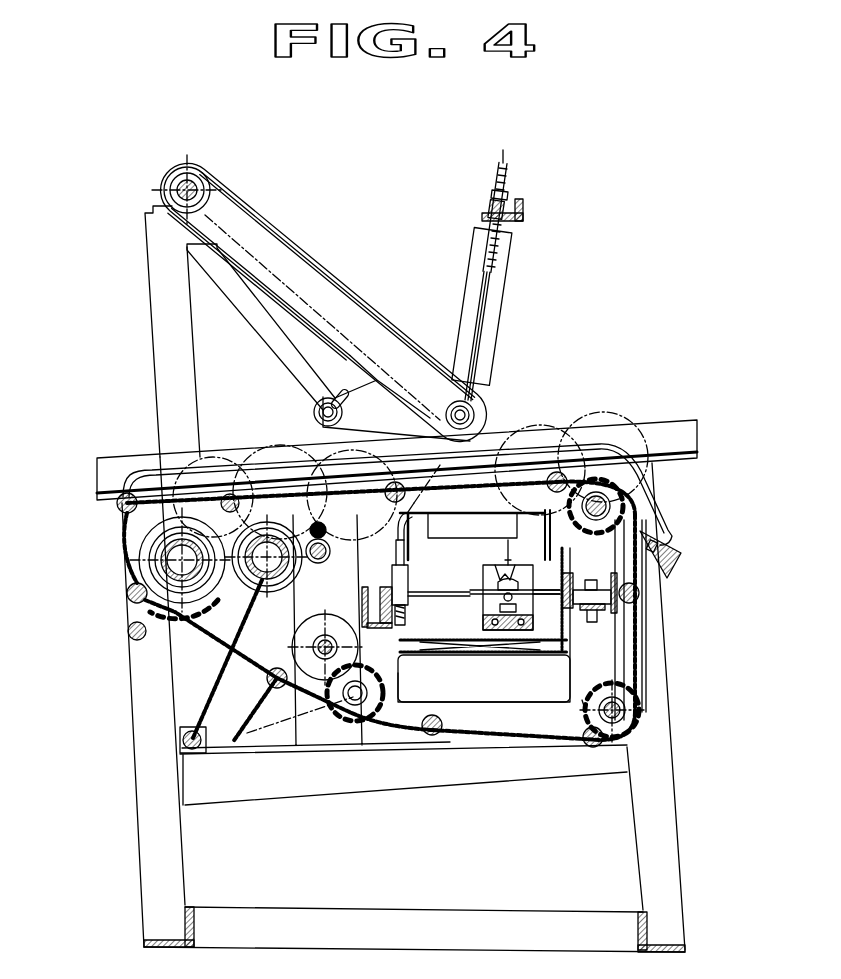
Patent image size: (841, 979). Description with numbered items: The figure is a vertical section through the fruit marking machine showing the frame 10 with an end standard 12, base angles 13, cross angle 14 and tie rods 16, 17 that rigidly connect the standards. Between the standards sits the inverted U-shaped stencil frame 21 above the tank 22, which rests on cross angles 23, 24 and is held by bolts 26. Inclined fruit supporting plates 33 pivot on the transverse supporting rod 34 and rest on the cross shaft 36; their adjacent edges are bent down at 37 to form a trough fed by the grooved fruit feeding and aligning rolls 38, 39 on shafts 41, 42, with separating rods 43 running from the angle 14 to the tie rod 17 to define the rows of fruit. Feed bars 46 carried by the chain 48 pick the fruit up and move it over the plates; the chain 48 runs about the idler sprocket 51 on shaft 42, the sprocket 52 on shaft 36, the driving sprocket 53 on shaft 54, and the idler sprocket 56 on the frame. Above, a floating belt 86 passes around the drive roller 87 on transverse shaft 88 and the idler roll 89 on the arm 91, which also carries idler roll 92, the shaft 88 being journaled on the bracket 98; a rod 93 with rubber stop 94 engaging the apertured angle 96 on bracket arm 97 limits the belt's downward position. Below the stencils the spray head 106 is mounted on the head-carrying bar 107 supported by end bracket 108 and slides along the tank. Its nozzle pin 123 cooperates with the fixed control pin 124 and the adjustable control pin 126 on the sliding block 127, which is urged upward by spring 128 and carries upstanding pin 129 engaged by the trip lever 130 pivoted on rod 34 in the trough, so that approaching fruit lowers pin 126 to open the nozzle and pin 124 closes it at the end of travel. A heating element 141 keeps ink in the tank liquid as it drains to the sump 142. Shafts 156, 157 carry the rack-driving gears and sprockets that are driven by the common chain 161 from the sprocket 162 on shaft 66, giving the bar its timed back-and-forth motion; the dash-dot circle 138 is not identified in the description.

The frame 10 is at (133, 782).
The end standard 12 is at (140, 827).
The base angles 13 is at (194, 915).
The cross angle 14 is at (672, 547).
The tie rod 16 is at (128, 633).
The tie rod 17 is at (118, 512).
The stencil frame 21 is at (550, 530).
The tank 22 is at (566, 630).
The cross angle 23 is at (372, 628).
The cross angle 24 is at (618, 580).
The bolts 26 is at (592, 582).
The fruit supporting plates 33 is at (520, 470).
The transverse supporting rod 34 is at (320, 521).
The cross shaft 36 is at (612, 503).
The downwardly bent edges 37 is at (322, 540).
The fruit feeding and aligning roll 38 is at (290, 580).
The fruit feeding and aligning roll 39 is at (168, 566).
The shaft 41 is at (266, 582).
The shaft 42 is at (148, 556).
The separating rods 43 is at (572, 460).
The bars or rollers 46 is at (272, 686).
The chain 48 is at (648, 662).
The idler sprocket 51 is at (128, 600).
The sprocket 52 is at (641, 520).
The driving sprocket 53 is at (582, 706).
The shaft 54 is at (626, 704).
The idler sprocket 56 is at (335, 712).
The shaft 66 is at (185, 738).
The belt 86 is at (338, 282).
The drive roller 87 is at (205, 170).
The transverse shaft 88 is at (187, 180).
The idler roll 89 is at (478, 416).
The arm 91 is at (378, 320).
The idler roll 92 is at (322, 418).
The rod 93 is at (482, 325).
The adjustable rubber stop 94 is at (488, 208).
The apertured transverse angle 96 is at (524, 214).
The bracket arm 97 is at (498, 267).
The bracket 98 is at (150, 281).
The spray head 106 is at (503, 563).
The head-carrying bar 107 is at (483, 624).
The end bracket 108 is at (527, 552).
The pin 123 is at (500, 600).
The fixed control pin 124 is at (560, 600).
The vertically adjustable control pin 126 is at (435, 590).
The sliding block 127 is at (410, 575).
The spring 128 is at (406, 608).
The upstanding pin 129 is at (396, 553).
The trip lever 130 is at (396, 528).
The circle 138 is at (240, 470).
The heating element 141 is at (468, 660).
The sump 142 is at (500, 682).
The shaft 156 is at (312, 647).
The shaft 157 is at (322, 565).
The common chain 161 is at (218, 672).
The sprocket 162 is at (245, 718).